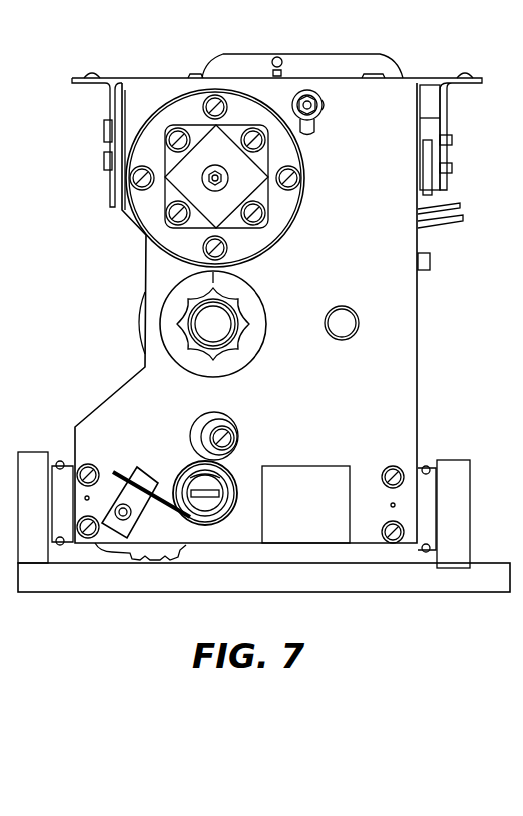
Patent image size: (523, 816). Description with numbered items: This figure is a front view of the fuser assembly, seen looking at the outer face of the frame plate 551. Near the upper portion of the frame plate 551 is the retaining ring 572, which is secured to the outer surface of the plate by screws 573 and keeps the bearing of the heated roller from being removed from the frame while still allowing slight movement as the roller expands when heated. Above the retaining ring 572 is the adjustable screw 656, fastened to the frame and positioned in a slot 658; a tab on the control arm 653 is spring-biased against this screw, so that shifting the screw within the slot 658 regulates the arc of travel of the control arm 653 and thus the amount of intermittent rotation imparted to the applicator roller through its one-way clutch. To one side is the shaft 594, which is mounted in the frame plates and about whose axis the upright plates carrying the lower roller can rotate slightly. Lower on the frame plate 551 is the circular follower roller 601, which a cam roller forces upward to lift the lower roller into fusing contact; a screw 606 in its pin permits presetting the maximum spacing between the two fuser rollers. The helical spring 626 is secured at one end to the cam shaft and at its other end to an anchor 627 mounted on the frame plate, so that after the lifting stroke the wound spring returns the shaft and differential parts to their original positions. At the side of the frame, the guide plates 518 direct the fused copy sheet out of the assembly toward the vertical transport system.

The control arm 653 is at (306, 56).
The adjustable screw 656 is at (322, 104).
The slot 658 is at (316, 131).
The retaining ring 572 is at (302, 163).
The screws 573 is at (262, 214).
The shaft 594 is at (344, 307).
The frame plate 551 is at (417, 370).
The guide plates 518 is at (450, 226).
The circular roller 601 is at (221, 414).
The screw 606 is at (236, 437).
The helical spring 626 is at (232, 478).
The anchor 627 is at (150, 468).